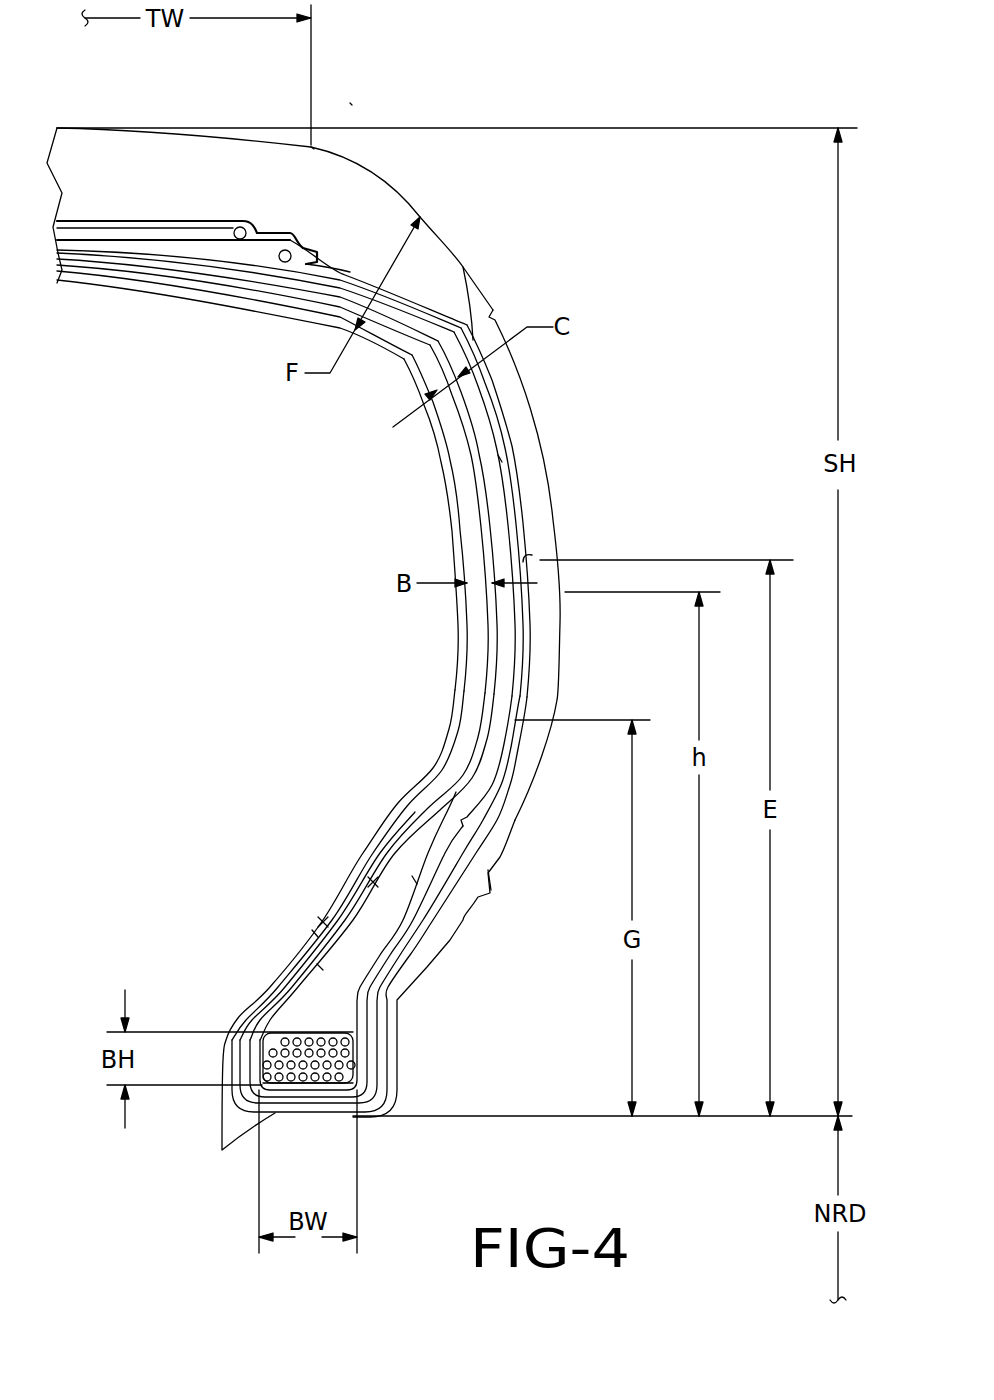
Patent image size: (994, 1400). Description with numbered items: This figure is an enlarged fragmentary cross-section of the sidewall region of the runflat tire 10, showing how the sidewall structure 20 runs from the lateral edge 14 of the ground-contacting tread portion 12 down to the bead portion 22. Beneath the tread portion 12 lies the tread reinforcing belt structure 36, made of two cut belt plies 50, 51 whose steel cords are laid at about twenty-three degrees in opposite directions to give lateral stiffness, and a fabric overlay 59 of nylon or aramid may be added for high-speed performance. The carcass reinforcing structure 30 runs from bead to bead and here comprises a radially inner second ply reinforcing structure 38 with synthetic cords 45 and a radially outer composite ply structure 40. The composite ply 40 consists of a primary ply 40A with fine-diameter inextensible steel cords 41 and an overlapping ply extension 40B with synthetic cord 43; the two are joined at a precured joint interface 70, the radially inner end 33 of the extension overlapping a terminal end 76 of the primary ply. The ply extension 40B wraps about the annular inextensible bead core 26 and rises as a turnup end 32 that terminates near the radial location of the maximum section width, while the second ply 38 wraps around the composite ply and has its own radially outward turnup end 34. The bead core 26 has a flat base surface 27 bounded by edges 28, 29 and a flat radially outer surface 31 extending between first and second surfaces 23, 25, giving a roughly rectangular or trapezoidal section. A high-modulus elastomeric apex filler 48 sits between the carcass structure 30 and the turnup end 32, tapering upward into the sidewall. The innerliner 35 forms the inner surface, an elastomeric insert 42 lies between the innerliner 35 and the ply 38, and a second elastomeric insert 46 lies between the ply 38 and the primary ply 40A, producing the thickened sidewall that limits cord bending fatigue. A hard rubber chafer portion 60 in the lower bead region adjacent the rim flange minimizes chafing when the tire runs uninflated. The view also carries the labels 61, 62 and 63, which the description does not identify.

The tire 10 is at (352, 101).
The tread portion 12 is at (60, 128).
The lateral edge 14 is at (335, 148).
The sidewall portion 20 is at (561, 625).
The bead portion 22 is at (393, 982).
The first surface 23 is at (257, 1060).
The second surface 25 is at (355, 1060).
The bead core 26 is at (305, 1007).
The flat base surface 27 is at (318, 1085).
The edge 28 is at (273, 1083).
The edge 29 is at (362, 1070).
The carcass reinforcing structure 30 is at (80, 274).
The flat radially outer surface 31 is at (382, 1010).
The turnup end 32 is at (468, 822).
The radially inner end 33 is at (380, 883).
The turnup end 34 is at (532, 554).
The innerliner 35 is at (315, 933).
The tread reinforcing belt structure 36 is at (99, 220).
The second ply reinforcing structure 38 is at (477, 483).
The composite ply structure 40 is at (495, 428).
The primary ply 40A is at (500, 458).
The ply extension 40B is at (470, 897).
The cords 41 is at (515, 533).
The elastomeric insert 42 is at (477, 567).
The synthetic cord 43 is at (350, 913).
The synthetic cords 45 is at (490, 530).
The elastomeric insert 46 is at (498, 515).
The apex filler 48 is at (417, 880).
The belt ply 50 is at (220, 240).
The belt ply 51 is at (220, 250).
The fabric overlay 59 is at (158, 222).
The chafer portion 60 is at (430, 945).
The ply 61 is at (285, 973).
The ply end 62 is at (312, 927).
The chafer strip 63 is at (382, 1016).
The joint interface 70 is at (320, 967).
The terminal end 76 is at (287, 1028).